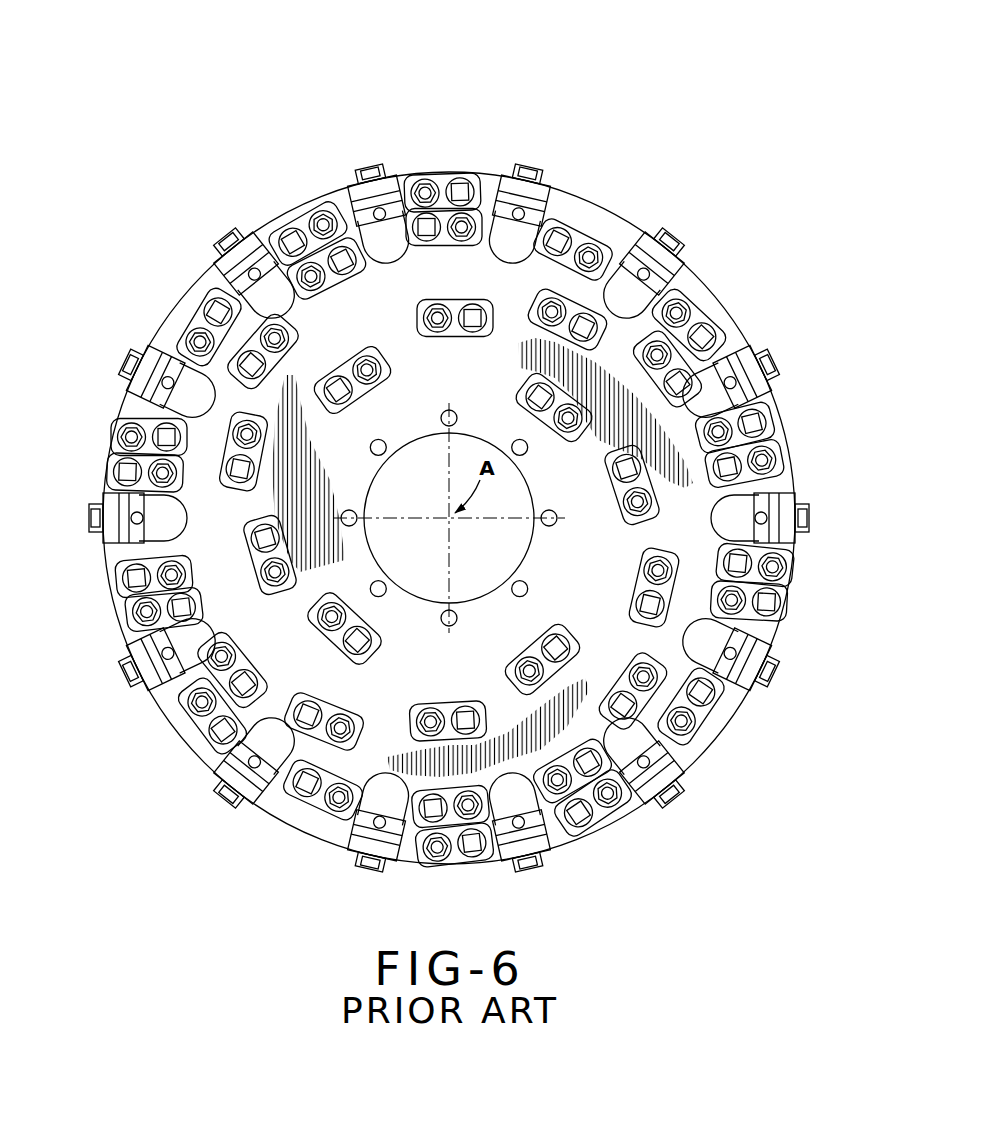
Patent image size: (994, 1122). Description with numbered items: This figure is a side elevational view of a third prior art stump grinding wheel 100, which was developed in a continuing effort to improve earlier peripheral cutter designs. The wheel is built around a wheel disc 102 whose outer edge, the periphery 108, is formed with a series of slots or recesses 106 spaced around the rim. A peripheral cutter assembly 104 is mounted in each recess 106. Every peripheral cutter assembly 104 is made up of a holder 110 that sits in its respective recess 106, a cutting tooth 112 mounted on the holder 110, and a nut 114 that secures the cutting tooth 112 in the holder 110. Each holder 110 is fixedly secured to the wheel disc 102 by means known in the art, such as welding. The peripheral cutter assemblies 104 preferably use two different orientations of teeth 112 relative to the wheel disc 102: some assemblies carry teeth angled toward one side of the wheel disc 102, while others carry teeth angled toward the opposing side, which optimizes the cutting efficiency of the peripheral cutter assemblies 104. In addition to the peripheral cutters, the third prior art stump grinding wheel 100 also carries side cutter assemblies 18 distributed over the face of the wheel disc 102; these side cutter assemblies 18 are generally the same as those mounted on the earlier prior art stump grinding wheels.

The third prior art stump grinding wheel 100 is at (746, 108).
The wheel disc 102 is at (610, 205).
The peripheral cutter assembly 104 is at (534, 180).
The slot or recess 106 is at (497, 226).
The periphery 108 is at (728, 312).
The holder 110 is at (252, 246).
The cutting tooth 112 is at (226, 248).
The nut 114 is at (258, 278).
The side cutter assembly 18 is at (152, 556).